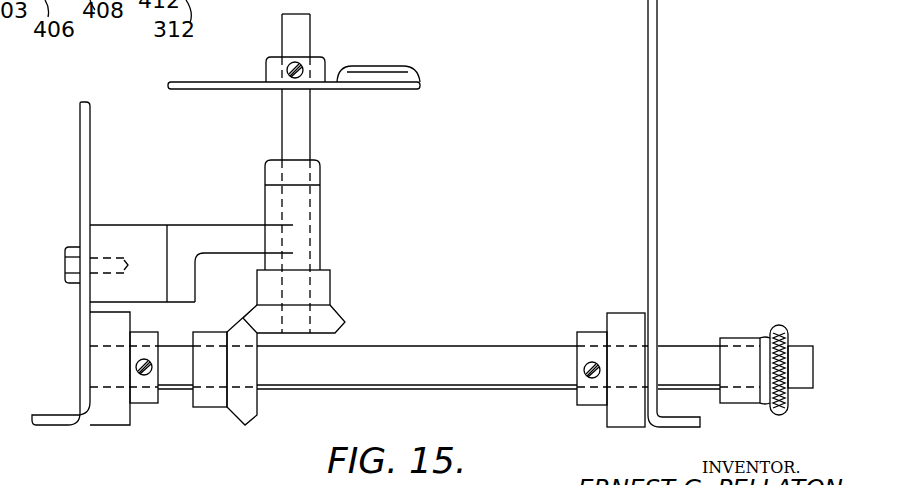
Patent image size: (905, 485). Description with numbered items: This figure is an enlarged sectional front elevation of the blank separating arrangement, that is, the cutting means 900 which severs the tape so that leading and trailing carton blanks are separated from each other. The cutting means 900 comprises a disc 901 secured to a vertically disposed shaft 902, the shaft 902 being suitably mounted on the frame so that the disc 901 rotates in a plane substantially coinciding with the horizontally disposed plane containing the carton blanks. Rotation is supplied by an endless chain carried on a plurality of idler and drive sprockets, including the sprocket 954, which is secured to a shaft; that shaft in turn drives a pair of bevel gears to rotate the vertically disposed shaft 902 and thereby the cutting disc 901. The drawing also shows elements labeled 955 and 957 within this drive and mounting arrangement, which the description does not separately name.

The cutting means 900 is at (455, 72).
The disc 901 is at (336, 89).
The shaft 902 is at (293, 124).
The sprocket 954 is at (782, 322).
The shaft 955 is at (462, 360).
The hex nut coupling 957 is at (327, 322).